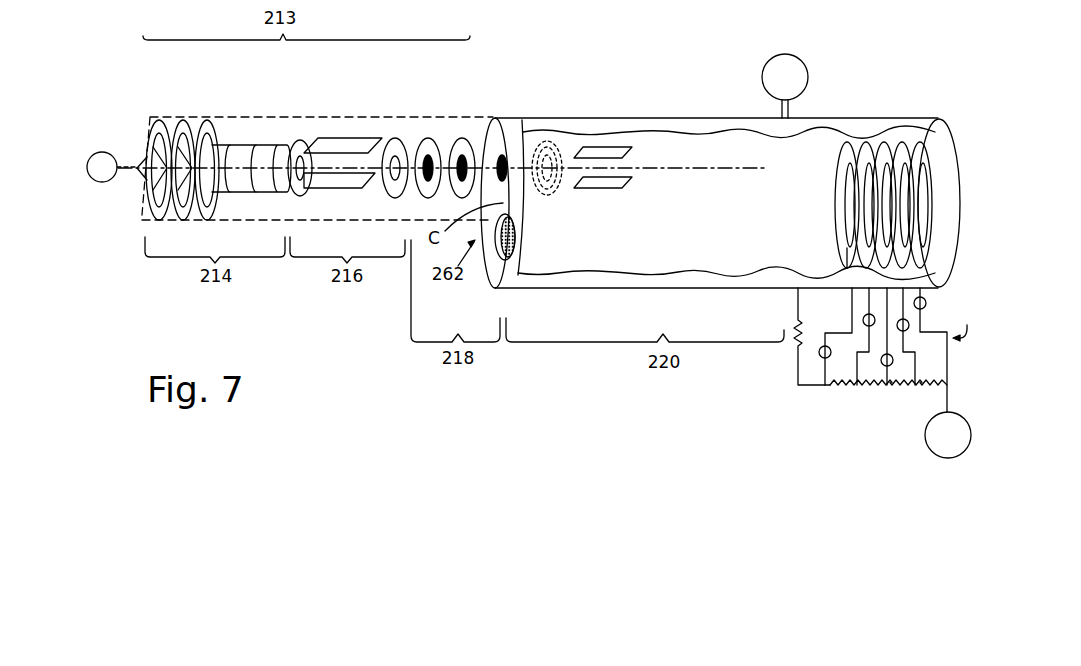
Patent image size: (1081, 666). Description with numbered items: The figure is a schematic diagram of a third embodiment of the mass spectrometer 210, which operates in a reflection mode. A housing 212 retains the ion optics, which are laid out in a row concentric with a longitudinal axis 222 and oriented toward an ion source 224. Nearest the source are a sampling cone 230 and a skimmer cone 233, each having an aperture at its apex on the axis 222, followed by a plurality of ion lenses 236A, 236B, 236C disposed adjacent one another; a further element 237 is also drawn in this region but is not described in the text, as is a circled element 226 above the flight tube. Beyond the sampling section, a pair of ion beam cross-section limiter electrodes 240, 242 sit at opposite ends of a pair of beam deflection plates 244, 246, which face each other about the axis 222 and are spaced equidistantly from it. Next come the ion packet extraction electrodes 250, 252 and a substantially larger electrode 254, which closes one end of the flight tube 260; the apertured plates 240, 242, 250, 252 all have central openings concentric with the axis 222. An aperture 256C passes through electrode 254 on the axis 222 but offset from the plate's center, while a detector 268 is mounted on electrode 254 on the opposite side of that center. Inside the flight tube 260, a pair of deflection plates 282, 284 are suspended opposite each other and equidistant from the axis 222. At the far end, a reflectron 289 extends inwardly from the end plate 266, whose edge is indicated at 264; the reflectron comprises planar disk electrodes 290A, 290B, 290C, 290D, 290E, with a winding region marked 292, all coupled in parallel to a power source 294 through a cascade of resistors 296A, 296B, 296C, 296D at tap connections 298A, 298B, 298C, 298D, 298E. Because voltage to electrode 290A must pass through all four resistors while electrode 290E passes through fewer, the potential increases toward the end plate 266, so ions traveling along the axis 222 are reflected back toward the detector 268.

The mass spectrometer 210 is at (677, 63).
The housing 212 is at (142, 216).
The axis 222 is at (742, 172).
The ion source 224 is at (89, 157).
The controller 226 is at (785, 86).
The sampling cone 230 is at (152, 127).
The skimmer cone 233 is at (176, 124).
The ion lens 236A is at (222, 143).
The ion lens 236B is at (247, 146).
The ion lens 236C is at (275, 146).
The third lens ring 237 is at (203, 123).
The ion beam cross-section limiter electrode 240 is at (305, 152).
The ion beam cross-section limiter electrode 242 is at (395, 138).
The beam deflection plate 244 is at (355, 146).
The beam deflection plate 246 is at (342, 182).
The ion packet extraction electrode 250 is at (428, 138).
The ion packet extraction electrode 252 is at (462, 138).
The ion packet extraction electrode 254 is at (520, 197).
The aperture 256C is at (507, 157).
The flight tube 260 is at (519, 118).
The housing rear edge 264 is at (942, 288).
The end plate 266 is at (947, 230).
The detector 268 is at (514, 243).
The deflection plate 282 is at (603, 151).
The deflection plate 284 is at (611, 187).
The reflectron 289 is at (820, 204).
The electrode 290A is at (845, 143).
The electrode 290B is at (868, 142).
The electrode 290C is at (889, 142).
The electrode 290D is at (900, 144).
The electrode 290E is at (917, 150).
The coil winding 292 is at (847, 207).
The power source 294 is at (948, 435).
The resistor 296A is at (842, 390).
The resistor 296B is at (868, 390).
The resistor 296C is at (903, 390).
The resistor 296D is at (930, 390).
The first tap contact 298A is at (819, 354).
The second tap contact 298B is at (862, 318).
The third tap contact 298C is at (893, 361).
The fourth tap contact 298D is at (909, 327).
The fifth tap contact 298E is at (926, 304).